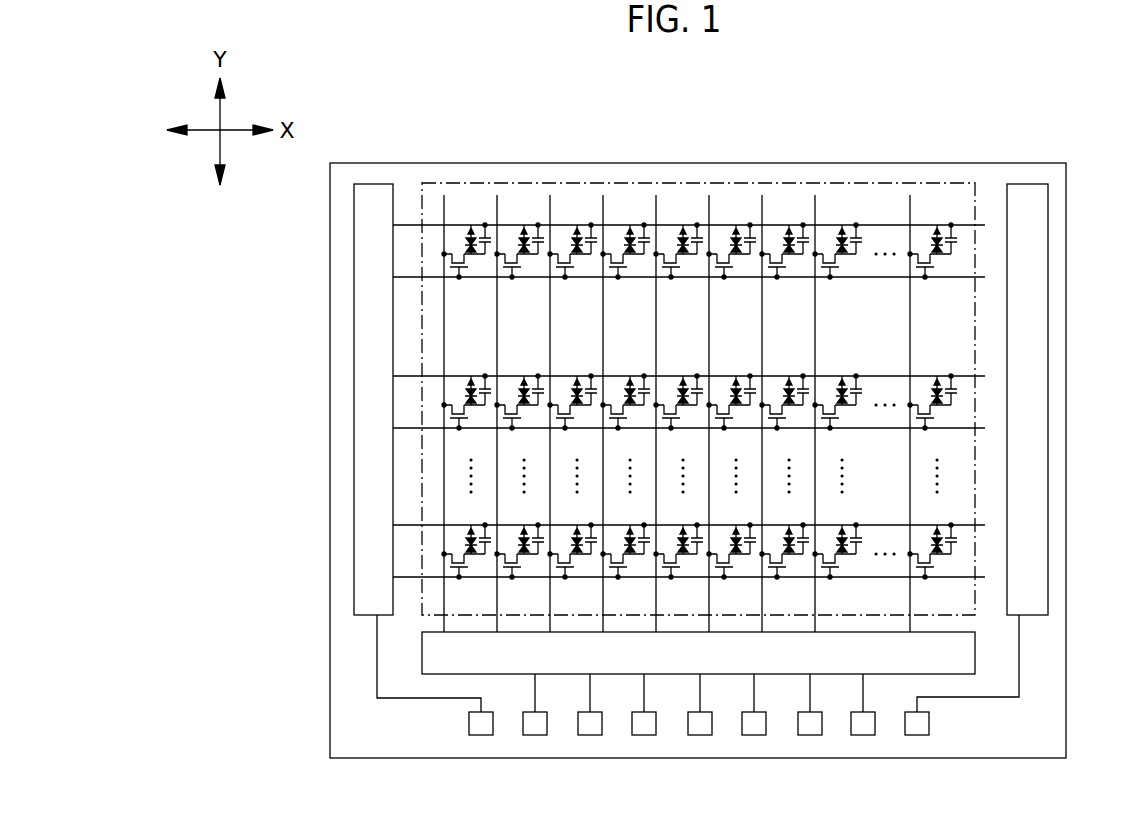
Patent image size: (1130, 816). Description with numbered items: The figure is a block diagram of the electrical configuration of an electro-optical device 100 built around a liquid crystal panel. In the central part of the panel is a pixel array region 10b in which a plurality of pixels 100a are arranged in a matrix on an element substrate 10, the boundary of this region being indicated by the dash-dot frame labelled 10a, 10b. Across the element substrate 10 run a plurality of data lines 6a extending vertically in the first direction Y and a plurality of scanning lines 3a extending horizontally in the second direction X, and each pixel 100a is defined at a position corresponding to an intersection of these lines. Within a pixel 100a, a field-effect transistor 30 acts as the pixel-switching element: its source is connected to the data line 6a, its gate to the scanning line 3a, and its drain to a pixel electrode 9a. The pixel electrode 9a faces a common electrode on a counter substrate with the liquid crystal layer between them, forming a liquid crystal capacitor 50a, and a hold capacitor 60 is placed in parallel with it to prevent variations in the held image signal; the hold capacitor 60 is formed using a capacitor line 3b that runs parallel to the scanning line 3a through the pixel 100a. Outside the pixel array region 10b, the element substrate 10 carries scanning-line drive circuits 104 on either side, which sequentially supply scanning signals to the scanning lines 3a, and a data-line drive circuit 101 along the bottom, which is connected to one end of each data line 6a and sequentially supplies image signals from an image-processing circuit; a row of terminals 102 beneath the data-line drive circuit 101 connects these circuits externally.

The electro-optical device 100 is at (460, 126).
The pixel 100a is at (509, 248).
The element substrate 10 is at (658, 163).
The display region 10a is at (797, 183).
The pixel array region 10b is at (698, 359).
The scanning-line drive circuit 104 is at (372, 183).
The data-line drive circuit 101 is at (835, 674).
The terminals 102 is at (702, 735).
The data line 6a is at (606, 213).
The scanning line 3a is at (898, 277).
The capacitor line 3b is at (870, 222).
The liquid crystal capacitor 50a is at (471, 235).
The hold capacitor 60 is at (489, 250).
The pixel electrode 9a is at (468, 265).
The field-effect transistor 30 is at (472, 280).